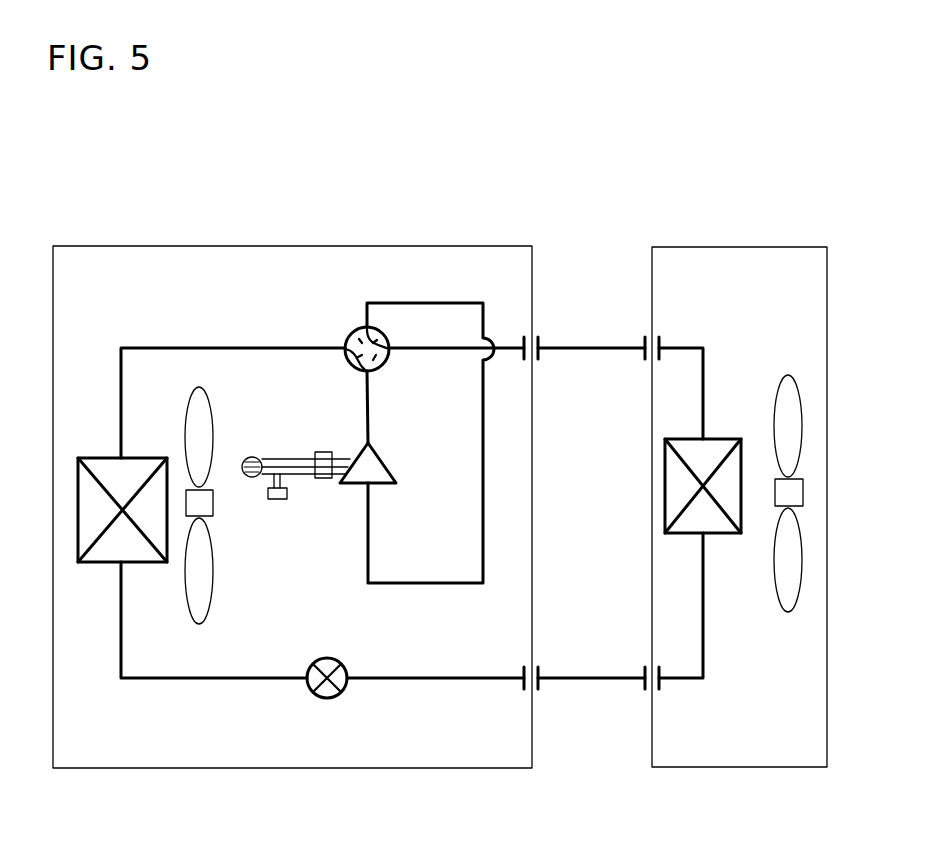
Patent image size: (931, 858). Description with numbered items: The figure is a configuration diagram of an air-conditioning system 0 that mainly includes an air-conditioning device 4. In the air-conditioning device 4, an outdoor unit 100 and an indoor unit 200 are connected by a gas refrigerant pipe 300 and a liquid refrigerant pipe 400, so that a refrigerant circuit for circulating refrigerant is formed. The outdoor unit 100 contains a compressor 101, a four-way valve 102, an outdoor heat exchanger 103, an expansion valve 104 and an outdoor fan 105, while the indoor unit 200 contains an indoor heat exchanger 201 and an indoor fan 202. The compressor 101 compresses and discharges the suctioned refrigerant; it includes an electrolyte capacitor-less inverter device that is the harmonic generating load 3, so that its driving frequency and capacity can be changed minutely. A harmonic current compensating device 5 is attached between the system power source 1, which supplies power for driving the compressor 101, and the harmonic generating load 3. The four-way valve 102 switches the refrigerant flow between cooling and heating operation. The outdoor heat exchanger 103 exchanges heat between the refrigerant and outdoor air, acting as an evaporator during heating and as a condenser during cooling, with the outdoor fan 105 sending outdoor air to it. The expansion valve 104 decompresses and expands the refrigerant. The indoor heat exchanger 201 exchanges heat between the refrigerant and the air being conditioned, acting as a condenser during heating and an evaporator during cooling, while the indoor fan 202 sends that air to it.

The air-conditioning system 0 is at (327, 230).
The air-conditioning device 4 is at (655, 246).
The system power source 1 is at (255, 461).
The harmonic generating load 3 is at (322, 480).
The harmonic current compensating device 5 is at (286, 500).
The outdoor unit 100 is at (277, 768).
The compressor 101 is at (380, 461).
The four-way valve 102 is at (350, 334).
The outdoor heat exchanger 103 is at (150, 565).
The expansion valve 104 is at (330, 660).
The outdoor fan 105 is at (198, 620).
The indoor unit 200 is at (730, 767).
The indoor heat exchanger 201 is at (713, 437).
The indoor fan 202 is at (787, 612).
The gas refrigerant pipe 300 is at (612, 348).
The liquid refrigerant pipe 400 is at (615, 677).